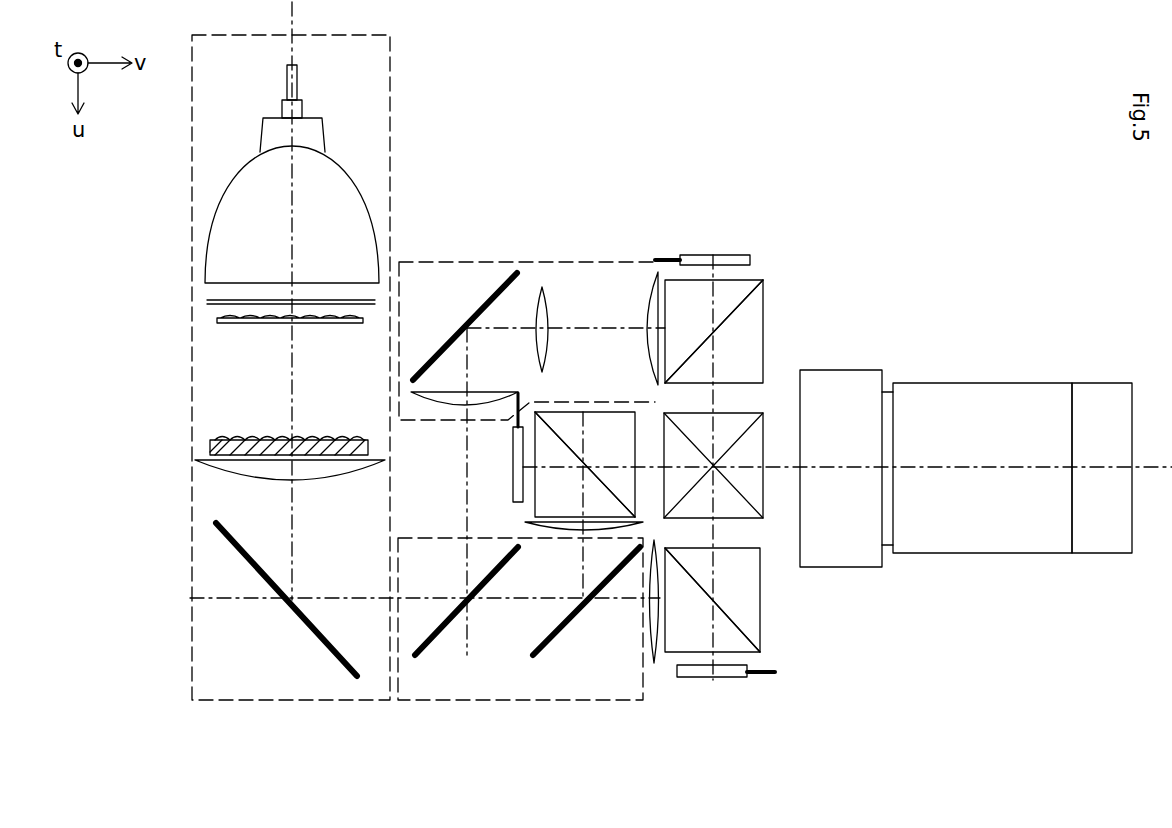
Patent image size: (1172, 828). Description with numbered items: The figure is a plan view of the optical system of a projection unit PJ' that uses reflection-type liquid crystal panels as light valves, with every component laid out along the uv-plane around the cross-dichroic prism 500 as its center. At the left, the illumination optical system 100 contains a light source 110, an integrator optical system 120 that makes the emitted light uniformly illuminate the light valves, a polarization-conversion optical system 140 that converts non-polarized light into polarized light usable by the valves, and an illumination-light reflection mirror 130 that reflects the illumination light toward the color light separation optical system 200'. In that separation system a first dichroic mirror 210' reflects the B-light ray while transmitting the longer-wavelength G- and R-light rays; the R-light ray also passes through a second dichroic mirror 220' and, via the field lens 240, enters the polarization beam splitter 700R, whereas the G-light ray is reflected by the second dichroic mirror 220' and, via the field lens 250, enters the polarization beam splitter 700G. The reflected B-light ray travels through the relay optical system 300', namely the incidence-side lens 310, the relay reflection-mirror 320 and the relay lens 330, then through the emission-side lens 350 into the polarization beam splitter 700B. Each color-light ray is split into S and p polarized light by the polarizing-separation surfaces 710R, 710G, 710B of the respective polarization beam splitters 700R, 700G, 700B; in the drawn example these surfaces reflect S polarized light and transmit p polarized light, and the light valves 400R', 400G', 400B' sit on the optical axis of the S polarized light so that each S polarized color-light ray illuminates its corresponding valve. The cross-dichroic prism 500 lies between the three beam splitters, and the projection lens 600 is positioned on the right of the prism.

The projection unit PJ' is at (972, 135).
The illumination optical system 100 is at (228, 702).
The light source 110 is at (199, 206).
The integrator optical system 120 is at (188, 468).
The illumination-light reflection mirror 130 is at (262, 578).
The polarization-conversion optical system 140 is at (370, 440).
The relay optical system 300' is at (527, 306).
The incidence-side lens 310 is at (487, 393).
The relay reflection-mirror 320 is at (438, 355).
The relay lens 330 is at (548, 300).
The emission-side lens 350 is at (642, 318).
The light valve for G-light ray 400G' is at (460, 447).
The polarization beam splitter for G-light ray 700G is at (535, 509).
The polarizing-separation surface 710G is at (537, 414).
The field lens 250 is at (527, 527).
The color light separation optical system 200' is at (520, 646).
The first dichroic mirror 210' is at (466, 621).
The second dichroic mirror 220' is at (586, 621).
The field lens 240 is at (655, 666).
The light valve for B-light ray 400B' is at (722, 238).
The polarization beam splitter for B-light ray 700B is at (765, 297).
The polarizing-separation surface 710B is at (763, 282).
The cross-dichroic prism 500 is at (763, 518).
The light valve for R-light ray 400R' is at (730, 703).
The polarization beam splitter for R-light ray 700R is at (762, 638).
The polarizing-separation surface 710R is at (738, 628).
The projection lens 600 is at (972, 560).